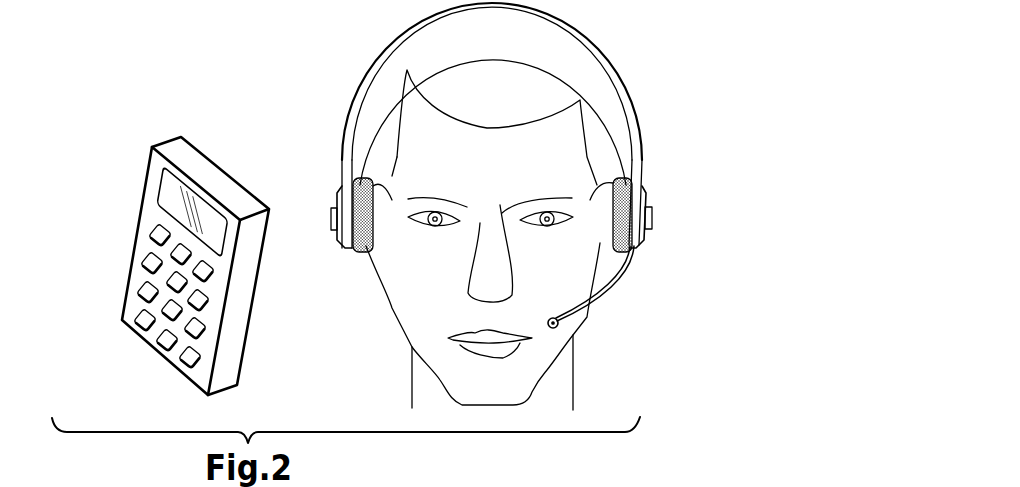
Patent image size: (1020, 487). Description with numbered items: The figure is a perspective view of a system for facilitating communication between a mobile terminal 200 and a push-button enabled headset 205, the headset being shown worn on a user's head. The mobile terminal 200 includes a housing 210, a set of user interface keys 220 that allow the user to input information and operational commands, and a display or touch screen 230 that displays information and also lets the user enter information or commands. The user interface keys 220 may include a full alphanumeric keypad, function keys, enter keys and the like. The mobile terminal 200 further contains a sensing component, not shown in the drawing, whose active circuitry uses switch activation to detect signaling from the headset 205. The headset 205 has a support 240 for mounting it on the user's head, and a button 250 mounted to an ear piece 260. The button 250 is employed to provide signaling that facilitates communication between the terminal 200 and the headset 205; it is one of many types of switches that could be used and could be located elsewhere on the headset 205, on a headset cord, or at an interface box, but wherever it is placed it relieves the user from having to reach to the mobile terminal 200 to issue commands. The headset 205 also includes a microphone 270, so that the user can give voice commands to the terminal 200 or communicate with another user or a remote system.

The mobile terminal 200 is at (240, 140).
The push-button enabled headset 205 is at (690, 67).
The housing 210 is at (170, 360).
The user interface keys 220 is at (128, 219).
The display or touch screen 230 is at (173, 192).
The support 240 is at (590, 25).
The button 250 is at (653, 217).
The ear piece 260 is at (643, 200).
The microphone 270 is at (558, 326).